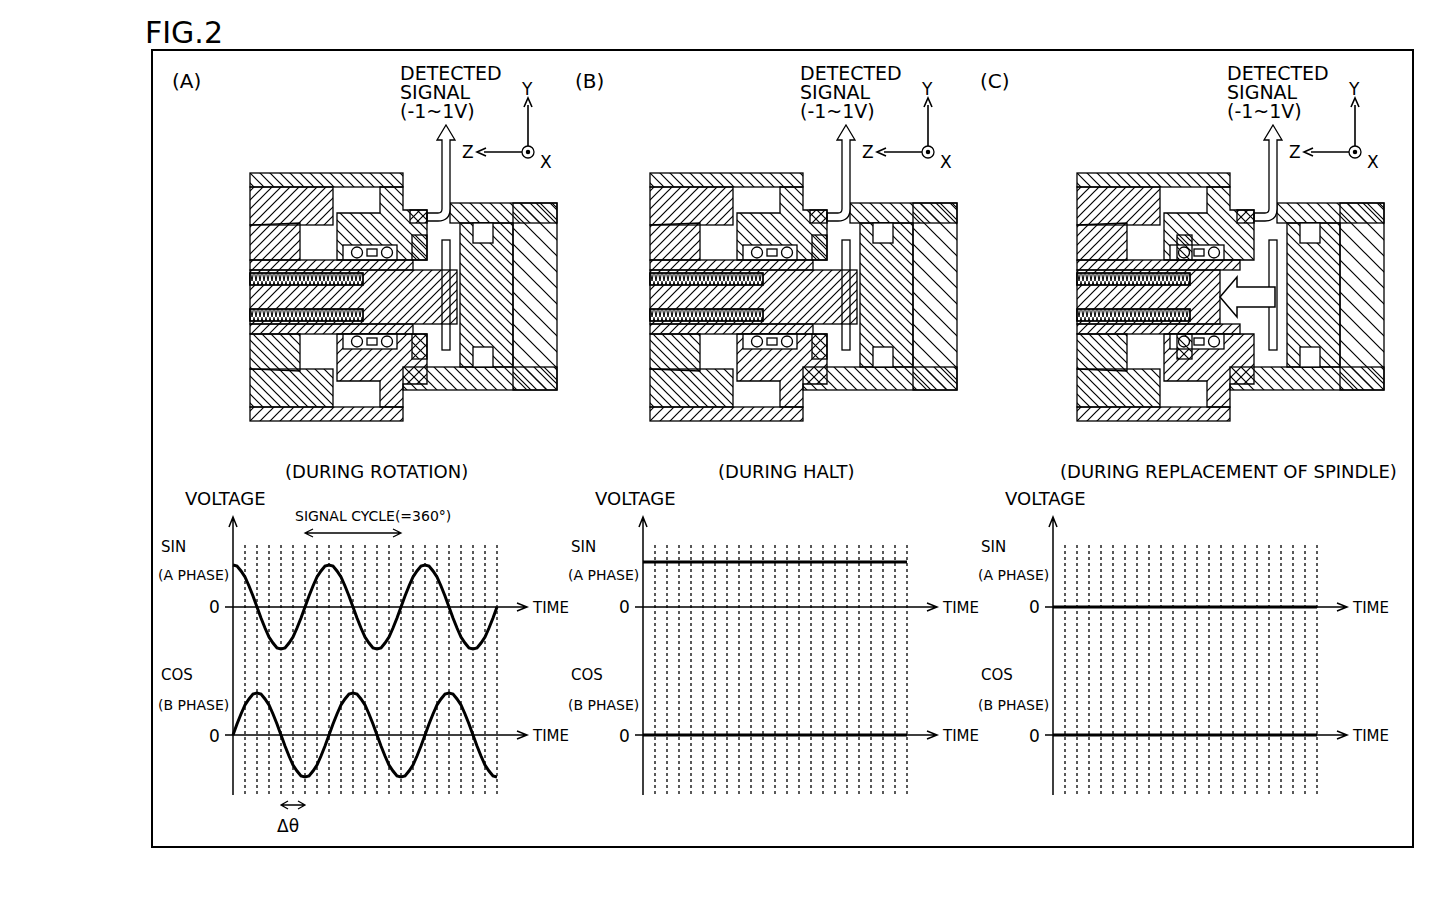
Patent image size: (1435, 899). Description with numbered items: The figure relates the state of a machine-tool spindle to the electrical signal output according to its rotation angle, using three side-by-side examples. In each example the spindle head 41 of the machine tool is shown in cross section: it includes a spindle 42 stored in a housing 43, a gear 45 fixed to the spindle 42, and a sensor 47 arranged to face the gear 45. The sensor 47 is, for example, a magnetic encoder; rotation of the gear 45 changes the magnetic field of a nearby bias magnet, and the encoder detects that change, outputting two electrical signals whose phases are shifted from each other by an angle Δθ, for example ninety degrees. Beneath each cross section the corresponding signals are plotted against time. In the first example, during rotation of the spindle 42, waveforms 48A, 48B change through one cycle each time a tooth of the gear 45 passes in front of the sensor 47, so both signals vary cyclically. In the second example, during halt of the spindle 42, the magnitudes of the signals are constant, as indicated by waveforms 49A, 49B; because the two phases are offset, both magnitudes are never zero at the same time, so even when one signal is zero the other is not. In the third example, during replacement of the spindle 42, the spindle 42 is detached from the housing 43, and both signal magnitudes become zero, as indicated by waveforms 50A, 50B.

The spindle head 41 is at (719, 297).
The spindle 42 is at (727, 297).
The housing 43 is at (728, 297).
The gear 45 is at (1184, 355).
The sensor 47 is at (1243, 213).
The waveform 48A is at (252, 584).
The waveform 48B is at (258, 696).
The waveform 49A is at (688, 560).
The waveform 49B is at (688, 733).
The waveform 50A is at (1095, 605).
The waveform 50B is at (1095, 733).